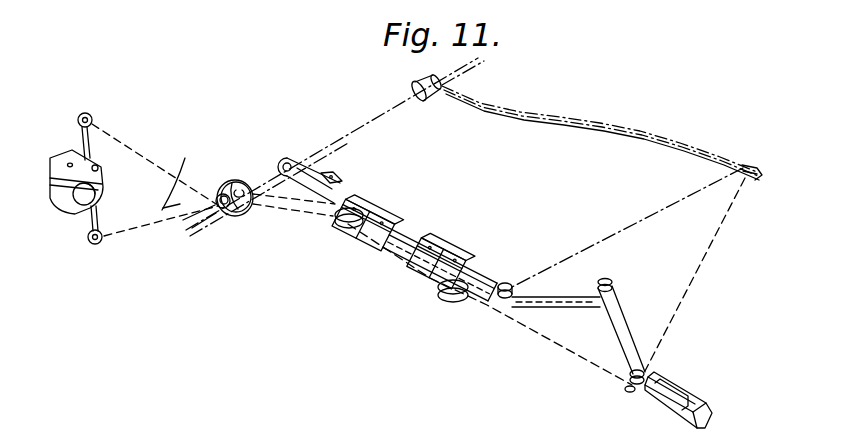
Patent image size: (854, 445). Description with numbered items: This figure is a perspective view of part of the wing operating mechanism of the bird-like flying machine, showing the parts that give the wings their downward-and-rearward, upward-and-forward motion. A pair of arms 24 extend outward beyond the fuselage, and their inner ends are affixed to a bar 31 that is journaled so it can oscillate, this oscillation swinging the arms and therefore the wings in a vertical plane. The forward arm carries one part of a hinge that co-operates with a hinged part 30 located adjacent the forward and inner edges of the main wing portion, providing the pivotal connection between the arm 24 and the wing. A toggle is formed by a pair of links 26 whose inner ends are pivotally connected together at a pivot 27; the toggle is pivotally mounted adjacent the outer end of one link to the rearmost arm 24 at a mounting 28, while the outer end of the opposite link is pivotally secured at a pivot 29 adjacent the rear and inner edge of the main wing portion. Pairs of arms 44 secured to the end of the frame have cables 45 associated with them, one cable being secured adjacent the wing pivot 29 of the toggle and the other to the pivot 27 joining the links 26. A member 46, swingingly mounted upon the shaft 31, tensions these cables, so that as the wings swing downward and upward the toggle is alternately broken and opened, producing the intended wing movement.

The arms 24 is at (551, 119).
The links 26 is at (617, 335).
The pivotal connection of the links 27 is at (613, 284).
The pivotal mounting of the toggle 28 is at (503, 305).
The pivotal connection to the wing 29 is at (636, 390).
The hinged part 30 is at (757, 179).
The bar 31 is at (372, 117).
The arms 44 is at (88, 145).
The cables 45 is at (187, 170).
The member 46 is at (230, 182).